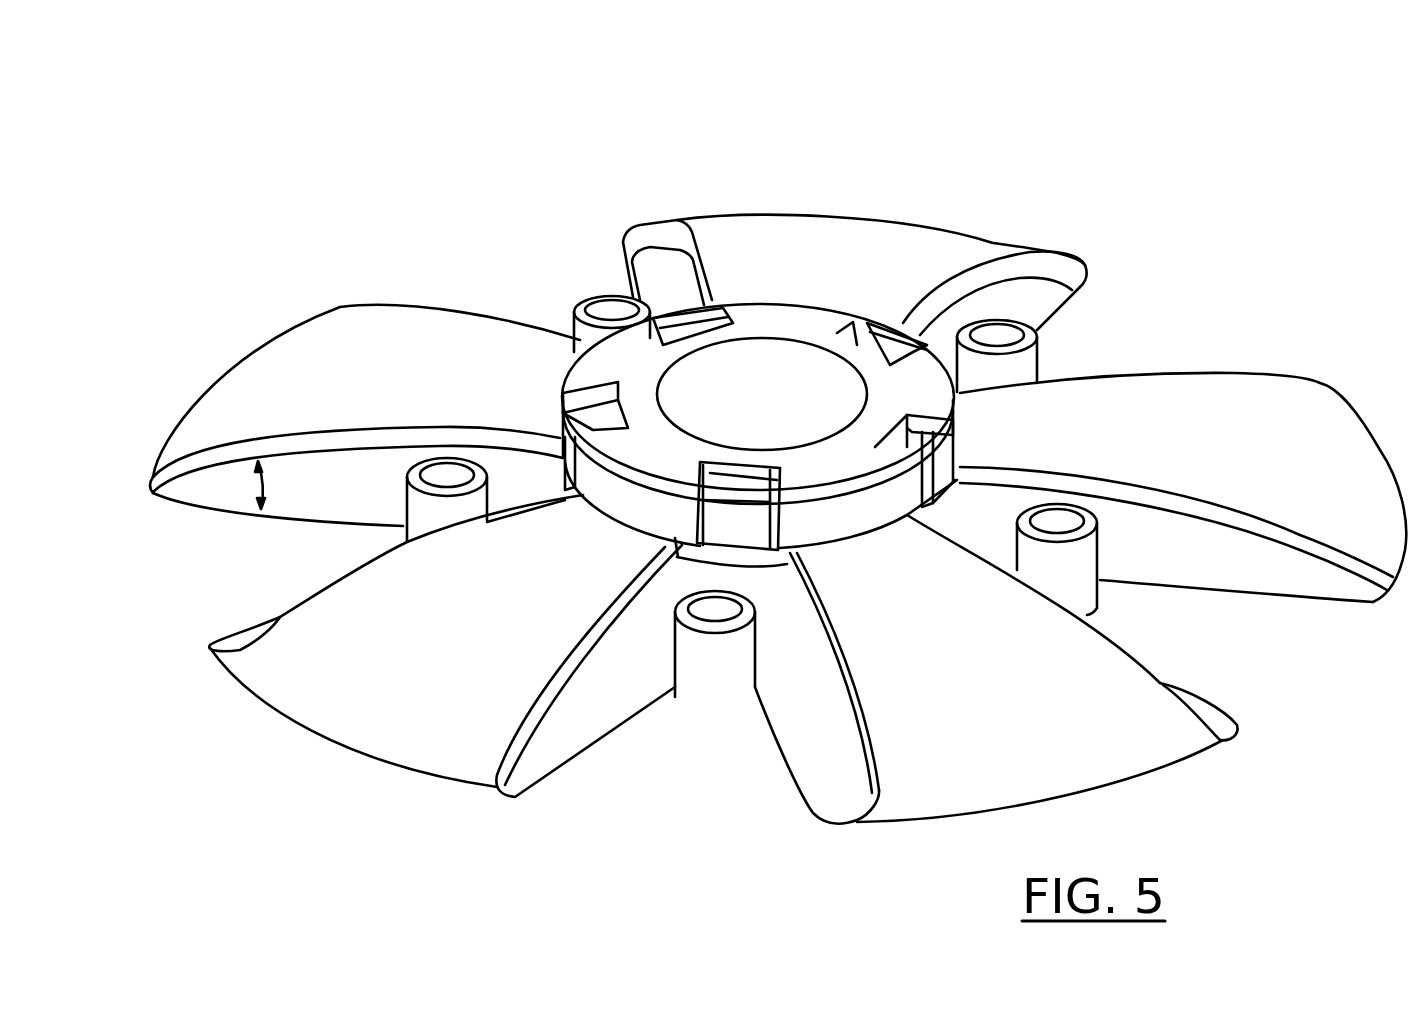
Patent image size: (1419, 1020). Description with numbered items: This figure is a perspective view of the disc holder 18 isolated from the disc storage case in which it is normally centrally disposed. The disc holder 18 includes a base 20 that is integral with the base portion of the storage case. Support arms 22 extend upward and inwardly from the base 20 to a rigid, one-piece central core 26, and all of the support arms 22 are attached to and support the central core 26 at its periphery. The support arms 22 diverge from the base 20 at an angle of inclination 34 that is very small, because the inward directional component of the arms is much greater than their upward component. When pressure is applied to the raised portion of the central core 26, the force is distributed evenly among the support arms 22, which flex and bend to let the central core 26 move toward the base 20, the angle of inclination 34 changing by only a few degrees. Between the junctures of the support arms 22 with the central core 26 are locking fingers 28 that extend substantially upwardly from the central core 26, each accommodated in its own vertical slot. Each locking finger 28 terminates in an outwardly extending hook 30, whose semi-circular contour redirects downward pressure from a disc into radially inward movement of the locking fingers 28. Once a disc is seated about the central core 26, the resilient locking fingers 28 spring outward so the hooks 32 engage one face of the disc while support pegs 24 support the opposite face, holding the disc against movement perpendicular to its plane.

The disc holder 18 is at (778, 452).
The base 20 is at (373, 760).
The support arms 22 is at (1093, 667).
The support pegs 24 is at (715, 677).
The central core 26 is at (778, 357).
The locking fingers 28 is at (707, 518).
The hook 30 is at (950, 437).
The hooks 32 is at (575, 337).
The angle of inclination 34 is at (258, 490).